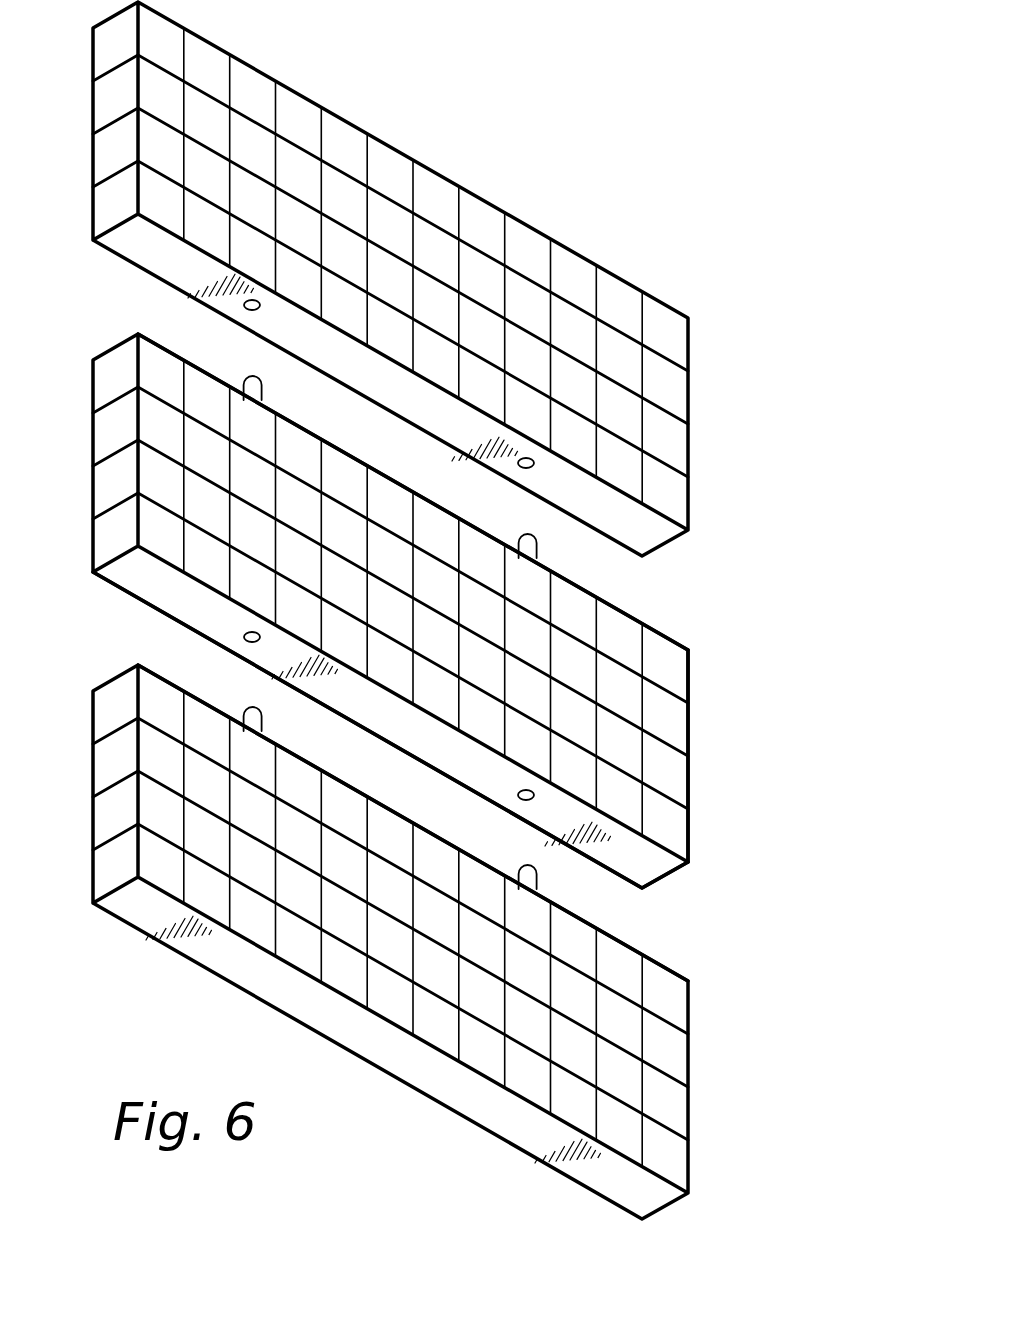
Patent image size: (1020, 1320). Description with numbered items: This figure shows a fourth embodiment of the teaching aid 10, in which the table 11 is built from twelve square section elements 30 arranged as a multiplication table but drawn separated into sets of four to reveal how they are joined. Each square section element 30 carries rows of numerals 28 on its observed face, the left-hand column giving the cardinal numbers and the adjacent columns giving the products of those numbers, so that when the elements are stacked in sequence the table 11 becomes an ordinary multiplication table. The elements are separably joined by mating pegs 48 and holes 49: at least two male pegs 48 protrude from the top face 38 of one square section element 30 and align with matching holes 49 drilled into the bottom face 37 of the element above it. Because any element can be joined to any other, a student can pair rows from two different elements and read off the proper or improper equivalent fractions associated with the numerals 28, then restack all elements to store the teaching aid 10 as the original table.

The teaching aid 10 is at (806, 218).
The table 11 is at (683, 233).
The numerals 28 is at (680, 983).
The square section elements 30 is at (745, 687).
The bottom face 37 is at (139, 574).
The top face 38 is at (660, 634).
The pegs 48 is at (247, 378).
The holes 49 is at (263, 332).